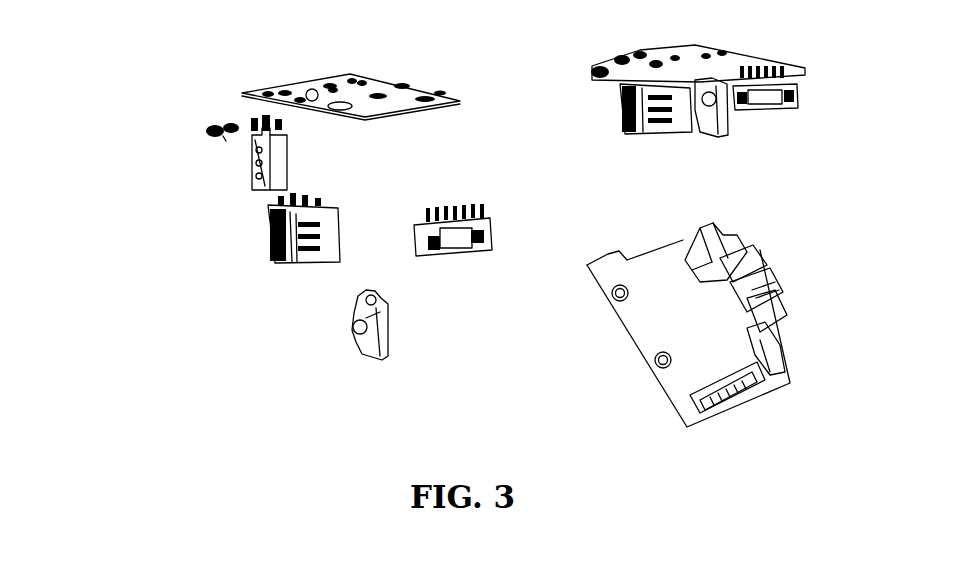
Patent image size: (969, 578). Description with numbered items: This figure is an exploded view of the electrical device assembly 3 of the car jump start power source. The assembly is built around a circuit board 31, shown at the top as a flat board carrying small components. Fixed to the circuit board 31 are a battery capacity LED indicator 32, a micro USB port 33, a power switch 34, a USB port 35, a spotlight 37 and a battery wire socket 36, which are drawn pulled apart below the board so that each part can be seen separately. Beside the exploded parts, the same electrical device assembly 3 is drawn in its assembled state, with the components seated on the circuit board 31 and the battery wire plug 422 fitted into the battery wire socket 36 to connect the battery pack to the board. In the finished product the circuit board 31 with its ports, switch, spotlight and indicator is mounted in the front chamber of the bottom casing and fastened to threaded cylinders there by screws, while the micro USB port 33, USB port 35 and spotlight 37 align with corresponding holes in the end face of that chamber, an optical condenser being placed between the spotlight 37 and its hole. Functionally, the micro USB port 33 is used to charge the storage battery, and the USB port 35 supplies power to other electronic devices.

The electrical device assembly 3 is at (612, 65).
The circuit board 31 is at (245, 93).
The battery capacity LED indicator 32 is at (361, 83).
The micro USB port 33 is at (213, 136).
The power switch 34 is at (250, 188).
The USB port 35 is at (268, 250).
The battery wire socket 36 is at (413, 248).
The spotlight 37 is at (362, 353).
The battery wire plug 422 is at (772, 105).